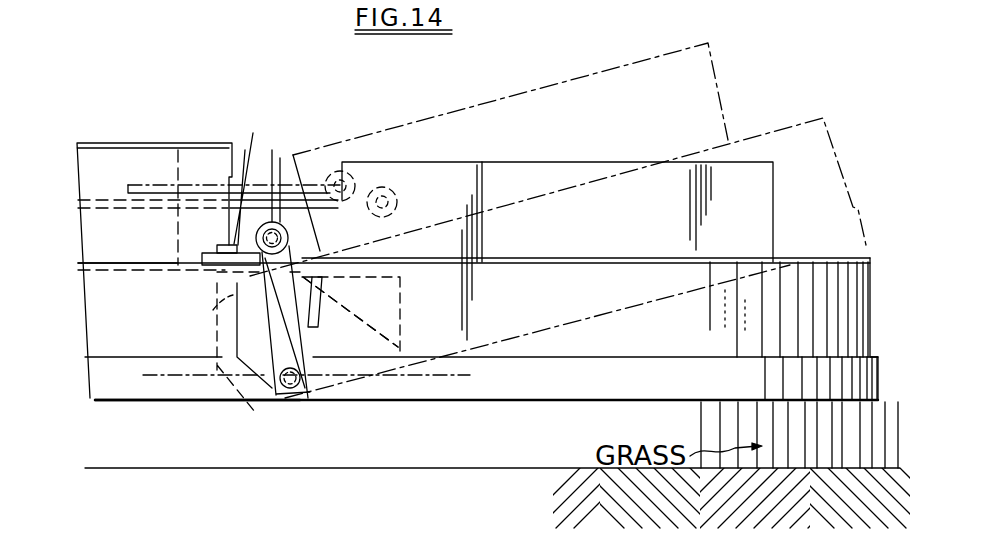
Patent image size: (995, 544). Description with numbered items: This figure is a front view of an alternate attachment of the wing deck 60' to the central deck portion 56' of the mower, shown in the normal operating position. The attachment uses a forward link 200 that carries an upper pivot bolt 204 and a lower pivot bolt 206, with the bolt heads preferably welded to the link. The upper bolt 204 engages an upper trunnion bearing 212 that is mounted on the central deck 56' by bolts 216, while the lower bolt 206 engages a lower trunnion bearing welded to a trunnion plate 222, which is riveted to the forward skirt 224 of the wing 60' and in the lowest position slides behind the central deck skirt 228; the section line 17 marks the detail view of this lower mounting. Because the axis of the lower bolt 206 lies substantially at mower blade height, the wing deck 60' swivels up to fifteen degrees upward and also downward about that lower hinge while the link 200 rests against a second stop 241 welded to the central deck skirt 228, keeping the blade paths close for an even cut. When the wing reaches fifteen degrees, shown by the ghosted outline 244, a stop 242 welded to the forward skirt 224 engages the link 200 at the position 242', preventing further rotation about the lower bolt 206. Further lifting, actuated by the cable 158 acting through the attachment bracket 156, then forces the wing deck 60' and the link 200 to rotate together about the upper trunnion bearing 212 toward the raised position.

The cable 158 is at (160, 190).
The upper pivot pin or bolt 204 is at (273, 150).
The bolts 216 is at (241, 182).
The upper trunnion bearing 212 is at (292, 158).
The attachment bracket 156 is at (408, 213).
The ghosted outline 244 is at (723, 100).
The wing deck 60' is at (815, 305).
The central deck portion 56' is at (128, 241).
The second stop 241 is at (247, 308).
The trunnion plate 222 is at (207, 330).
The stop 242 is at (347, 314).
The stop engaging position 242' is at (350, 312).
The central deck skirt 228 is at (123, 388).
The section line 17 is at (434, 430).
The forward link 200 is at (275, 392).
The lower pivot pin or bolt 206 is at (292, 385).
The forward skirt 224 is at (645, 390).